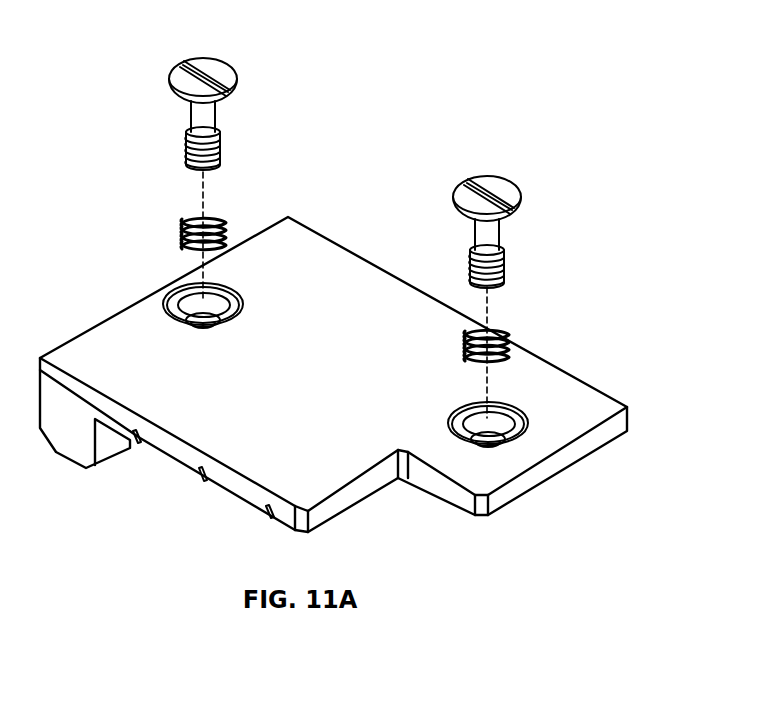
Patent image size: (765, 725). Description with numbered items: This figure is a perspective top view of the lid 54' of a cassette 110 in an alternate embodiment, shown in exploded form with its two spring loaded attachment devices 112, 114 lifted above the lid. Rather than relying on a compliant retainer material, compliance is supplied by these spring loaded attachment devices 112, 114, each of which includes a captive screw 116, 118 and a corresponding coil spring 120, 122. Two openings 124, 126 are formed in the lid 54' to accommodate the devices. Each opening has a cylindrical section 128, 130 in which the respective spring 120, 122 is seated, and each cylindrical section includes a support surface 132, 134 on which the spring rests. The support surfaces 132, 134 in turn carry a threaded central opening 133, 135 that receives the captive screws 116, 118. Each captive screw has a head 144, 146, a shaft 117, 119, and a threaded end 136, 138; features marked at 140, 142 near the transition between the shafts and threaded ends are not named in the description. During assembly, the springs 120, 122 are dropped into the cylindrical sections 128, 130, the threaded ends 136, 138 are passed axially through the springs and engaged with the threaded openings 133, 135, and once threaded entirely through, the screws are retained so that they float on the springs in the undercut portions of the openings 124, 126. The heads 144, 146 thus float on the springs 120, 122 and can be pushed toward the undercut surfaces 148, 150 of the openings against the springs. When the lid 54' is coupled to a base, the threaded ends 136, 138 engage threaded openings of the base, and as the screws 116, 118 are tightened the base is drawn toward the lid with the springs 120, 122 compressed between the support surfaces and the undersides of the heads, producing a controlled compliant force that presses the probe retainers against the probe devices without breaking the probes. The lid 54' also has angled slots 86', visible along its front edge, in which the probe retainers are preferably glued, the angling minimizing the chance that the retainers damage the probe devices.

The cassette 110 is at (455, 92).
The spring loaded attachment device 112 is at (240, 145).
The spring loaded attachment device 114 is at (522, 268).
The captive screw 116 is at (240, 76).
The shaft 117 is at (209, 122).
The captive screw 118 is at (519, 184).
The shaft 119 is at (476, 233).
The spring 120 is at (222, 212).
The spring 122 is at (510, 337).
The opening 124 is at (190, 298).
The opening 126 is at (515, 430).
The cylindrical section 128 is at (224, 313).
The cylindrical section 130 is at (496, 434).
The support surface 132 is at (163, 302).
The central opening 133 is at (199, 328).
The support surface 134 is at (490, 441).
The central opening 135 is at (453, 423).
The threaded end 136 is at (187, 146).
The threaded end 138 is at (507, 278).
The shoulder of first screw 140 is at (187, 130).
The shoulder of second screw 142 is at (506, 242).
The head 144 is at (171, 74).
The head 146 is at (500, 178).
The undercut surface 148 is at (238, 314).
The undercut surface 150 is at (463, 421).
The lid 54' is at (333, 364).
The slots 86' is at (182, 493).